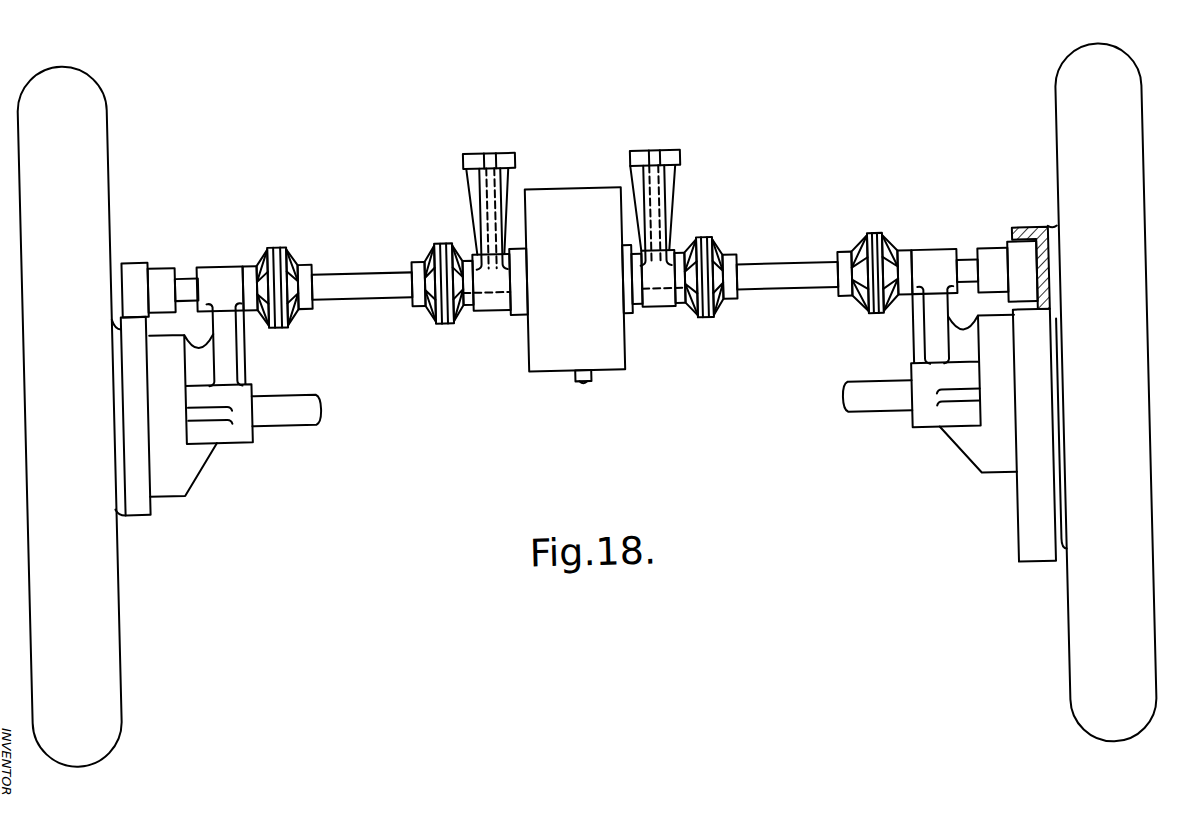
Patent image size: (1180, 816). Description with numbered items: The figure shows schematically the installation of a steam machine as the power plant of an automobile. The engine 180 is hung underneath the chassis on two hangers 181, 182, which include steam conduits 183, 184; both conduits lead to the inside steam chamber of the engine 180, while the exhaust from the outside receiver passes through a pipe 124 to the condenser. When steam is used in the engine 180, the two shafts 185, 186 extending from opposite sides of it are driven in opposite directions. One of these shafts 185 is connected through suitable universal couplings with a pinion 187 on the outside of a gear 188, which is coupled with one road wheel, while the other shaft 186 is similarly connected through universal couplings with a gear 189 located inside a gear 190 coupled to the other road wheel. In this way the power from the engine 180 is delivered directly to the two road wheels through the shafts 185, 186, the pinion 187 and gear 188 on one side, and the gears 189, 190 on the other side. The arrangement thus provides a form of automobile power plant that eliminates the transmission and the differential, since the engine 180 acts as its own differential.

The pipe 124 is at (590, 380).
The engine 180 is at (574, 360).
The hanger 181 is at (486, 150).
The hanger 182 is at (678, 139).
The steam conduit 183 is at (492, 195).
The steam conduit 184 is at (658, 199).
The shaft 185 is at (454, 320).
The shaft 186 is at (695, 310).
The pinion 187 is at (136, 259).
The gear 188 is at (147, 504).
The gear 189 is at (1019, 275).
The gear 190 is at (1032, 241).